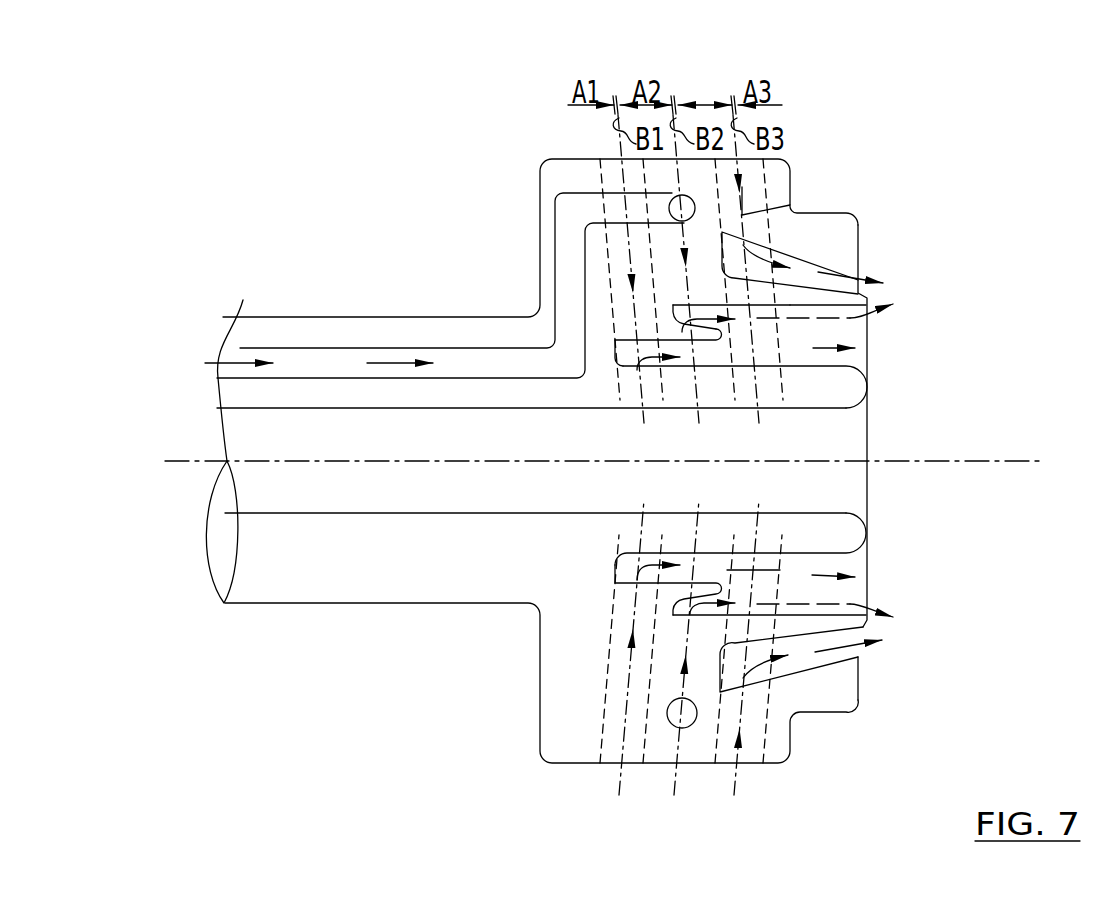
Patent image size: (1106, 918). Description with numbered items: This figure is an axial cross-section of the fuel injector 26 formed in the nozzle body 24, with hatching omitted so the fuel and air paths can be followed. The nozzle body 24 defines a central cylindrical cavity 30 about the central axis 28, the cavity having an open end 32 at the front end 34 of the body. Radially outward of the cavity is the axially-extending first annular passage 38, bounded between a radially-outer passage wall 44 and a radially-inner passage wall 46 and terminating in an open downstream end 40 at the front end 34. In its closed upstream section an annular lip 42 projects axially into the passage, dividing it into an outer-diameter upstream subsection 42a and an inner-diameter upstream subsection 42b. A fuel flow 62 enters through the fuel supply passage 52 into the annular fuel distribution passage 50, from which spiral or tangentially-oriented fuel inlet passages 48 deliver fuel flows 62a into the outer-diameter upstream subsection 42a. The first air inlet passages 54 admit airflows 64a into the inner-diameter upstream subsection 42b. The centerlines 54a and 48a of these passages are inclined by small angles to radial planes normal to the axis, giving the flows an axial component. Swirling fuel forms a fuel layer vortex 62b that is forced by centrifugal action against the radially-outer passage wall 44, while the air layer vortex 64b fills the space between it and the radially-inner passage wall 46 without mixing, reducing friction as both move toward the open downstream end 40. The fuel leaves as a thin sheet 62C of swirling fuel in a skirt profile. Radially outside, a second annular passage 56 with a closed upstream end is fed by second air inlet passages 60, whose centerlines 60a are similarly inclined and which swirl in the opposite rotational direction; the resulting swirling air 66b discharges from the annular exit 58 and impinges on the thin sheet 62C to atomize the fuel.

The nozzle body 24 is at (538, 732).
The fuel injector 26 is at (890, 200).
The central axis 28 is at (170, 462).
The central cylindrical cavity 30 is at (435, 504).
The open end 32 is at (866, 436).
The front end 34 is at (867, 378).
The first annular passage 38 is at (750, 366).
The open downstream end 40 is at (867, 348).
The annular lip 42 is at (726, 591).
The outer-diameter upstream subsection 42a is at (680, 320).
The inner-diameter upstream subsection 42b is at (623, 353).
The radially-outer passage wall 44 is at (867, 594).
The radially-inner passage wall 46 is at (823, 560).
The fuel inlet passages 48 is at (678, 682).
The centerlines of the fuel inlet passages 48a is at (700, 392).
The annular fuel distribution passage 50 is at (673, 728).
The fuel supply passage 52 is at (357, 358).
The first air inlet passages 54 is at (612, 743).
The centerlines of the first air inlet passages 54a is at (620, 178).
The second annular passage 56 is at (838, 667).
The annular exit 58 is at (852, 653).
The second air inlet passages 60 is at (757, 742).
The centerlines of the second air inlet passages 60a is at (797, 207).
The fuel flow 62 is at (240, 345).
The fuel flows 62a is at (702, 328).
The fuel layer vortex 62b is at (797, 307).
The thin sheet of swirling fuel 62C is at (870, 324).
The airflows 64a is at (627, 252).
The air layer vortex 64b is at (757, 345).
The swirling air 66b is at (852, 260).